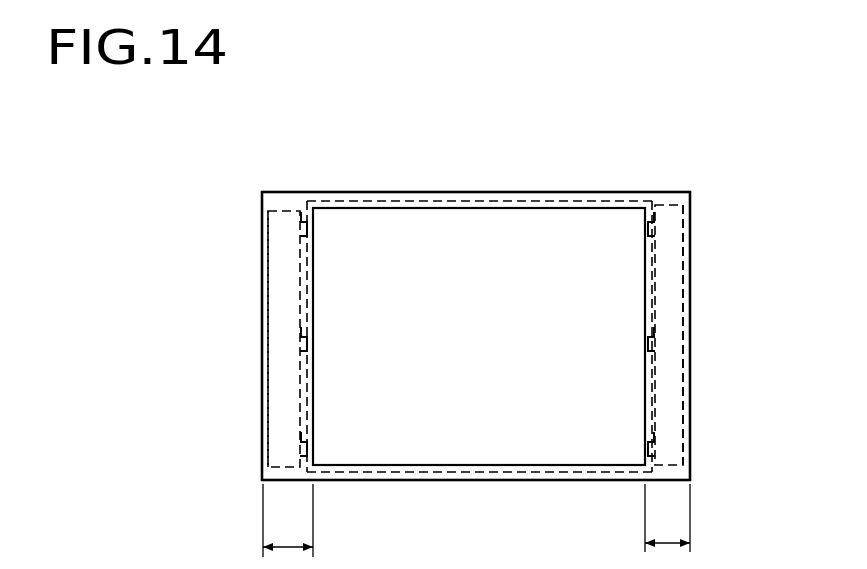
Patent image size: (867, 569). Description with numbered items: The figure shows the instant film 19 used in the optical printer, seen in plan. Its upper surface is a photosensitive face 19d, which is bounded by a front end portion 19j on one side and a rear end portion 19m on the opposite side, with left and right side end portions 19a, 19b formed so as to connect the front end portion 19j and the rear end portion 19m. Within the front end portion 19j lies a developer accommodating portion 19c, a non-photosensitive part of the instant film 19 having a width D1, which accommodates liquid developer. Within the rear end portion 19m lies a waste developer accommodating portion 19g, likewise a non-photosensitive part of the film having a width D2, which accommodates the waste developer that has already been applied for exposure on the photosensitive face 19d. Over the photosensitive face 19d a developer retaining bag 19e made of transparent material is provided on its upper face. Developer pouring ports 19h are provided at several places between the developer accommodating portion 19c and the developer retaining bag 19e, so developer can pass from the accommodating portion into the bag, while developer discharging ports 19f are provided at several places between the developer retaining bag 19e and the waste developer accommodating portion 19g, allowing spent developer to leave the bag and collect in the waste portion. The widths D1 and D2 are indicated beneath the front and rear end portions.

The instant film 19 is at (343, 192).
The left side end portion 19a is at (408, 480).
The right side end portion 19b is at (433, 192).
The developer accommodating portion 19c is at (262, 473).
The photosensitive face 19d is at (543, 314).
The developer retaining bag 19e is at (519, 472).
The developer discharging ports 19f is at (652, 333).
The waste developer accommodating portion 19g is at (683, 466).
The developer pouring ports 19h is at (300, 338).
The front end portion 19j is at (287, 295).
The rear end portion 19m is at (667, 291).
The width of developer accommodating portion D1 is at (288, 520).
The width of waste developer accommodating portion D2 is at (667, 518).